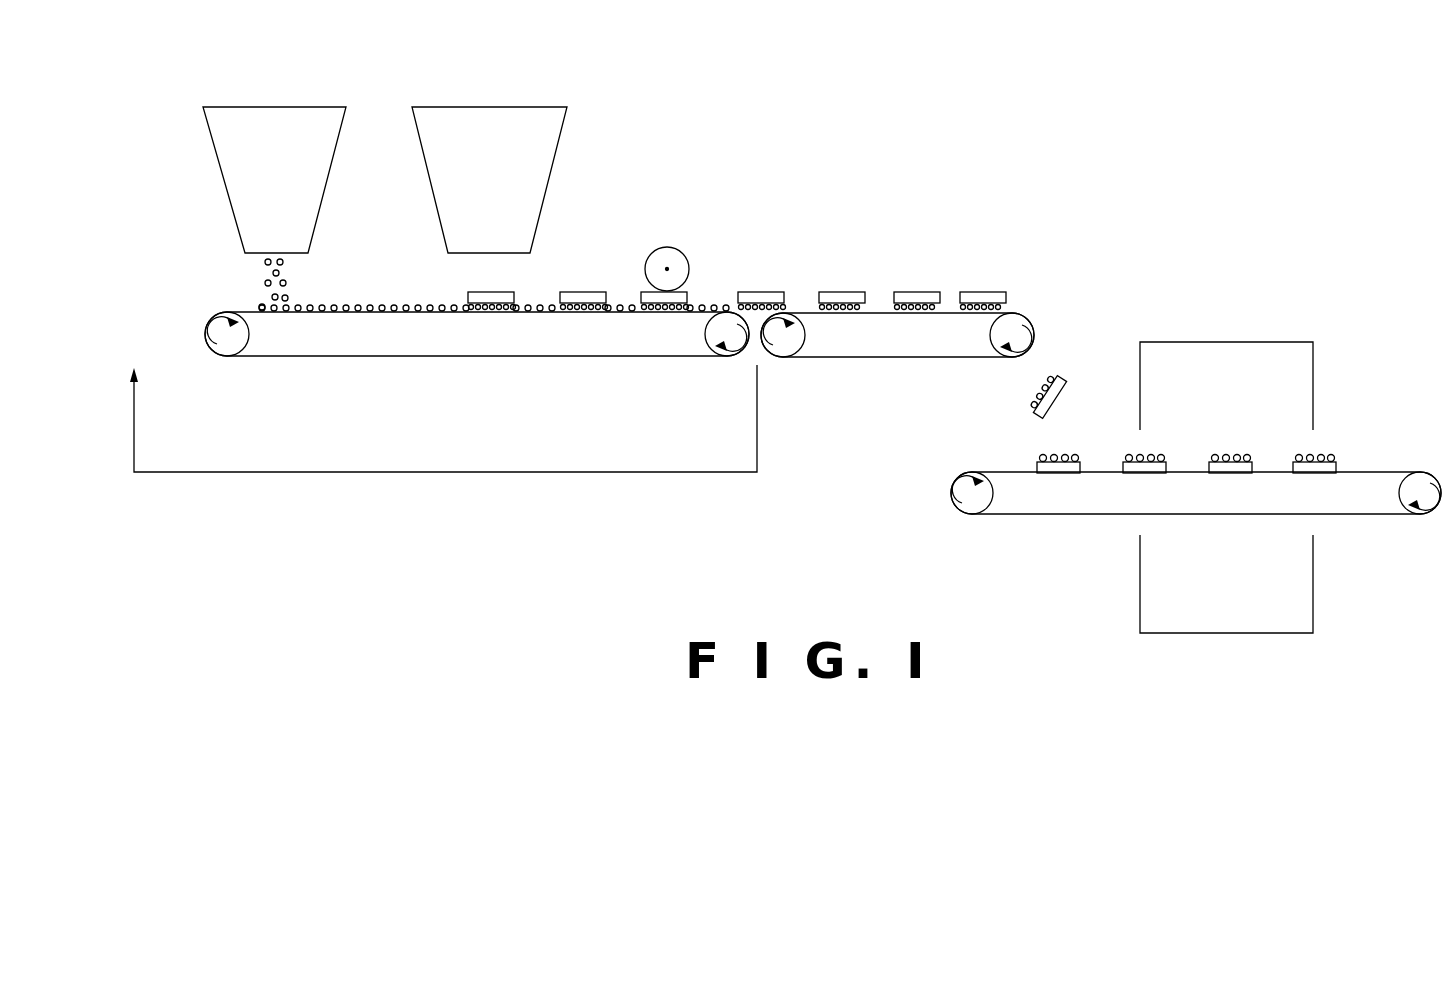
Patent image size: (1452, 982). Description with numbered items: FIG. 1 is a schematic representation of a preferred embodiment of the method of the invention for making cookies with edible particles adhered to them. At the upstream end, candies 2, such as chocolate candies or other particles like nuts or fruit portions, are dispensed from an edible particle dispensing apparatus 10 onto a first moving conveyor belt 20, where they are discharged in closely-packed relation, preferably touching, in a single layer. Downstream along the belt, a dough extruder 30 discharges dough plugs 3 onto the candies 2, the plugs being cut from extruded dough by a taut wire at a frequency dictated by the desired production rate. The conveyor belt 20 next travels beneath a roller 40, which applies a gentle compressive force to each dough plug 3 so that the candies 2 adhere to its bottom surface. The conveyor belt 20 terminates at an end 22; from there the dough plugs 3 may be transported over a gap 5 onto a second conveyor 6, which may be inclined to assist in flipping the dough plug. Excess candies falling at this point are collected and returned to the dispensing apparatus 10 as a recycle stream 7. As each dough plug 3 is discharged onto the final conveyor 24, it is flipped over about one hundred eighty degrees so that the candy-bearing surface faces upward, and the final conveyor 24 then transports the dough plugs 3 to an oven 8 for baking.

The edible particle dispensing apparatus 10 is at (248, 128).
The dough extruder 30 is at (535, 145).
The candies 2 is at (268, 284).
The first moving conveyor belt 20 is at (494, 345).
The dough plugs 3 is at (515, 292).
The roller 40 is at (688, 262).
The second conveyor 6 is at (931, 292).
The end of conveyor 22 is at (1034, 331).
The gap 5 is at (755, 345).
The recycle stream 7 is at (548, 473).
The oven 8 is at (1237, 360).
The final conveyor 24 is at (1018, 510).